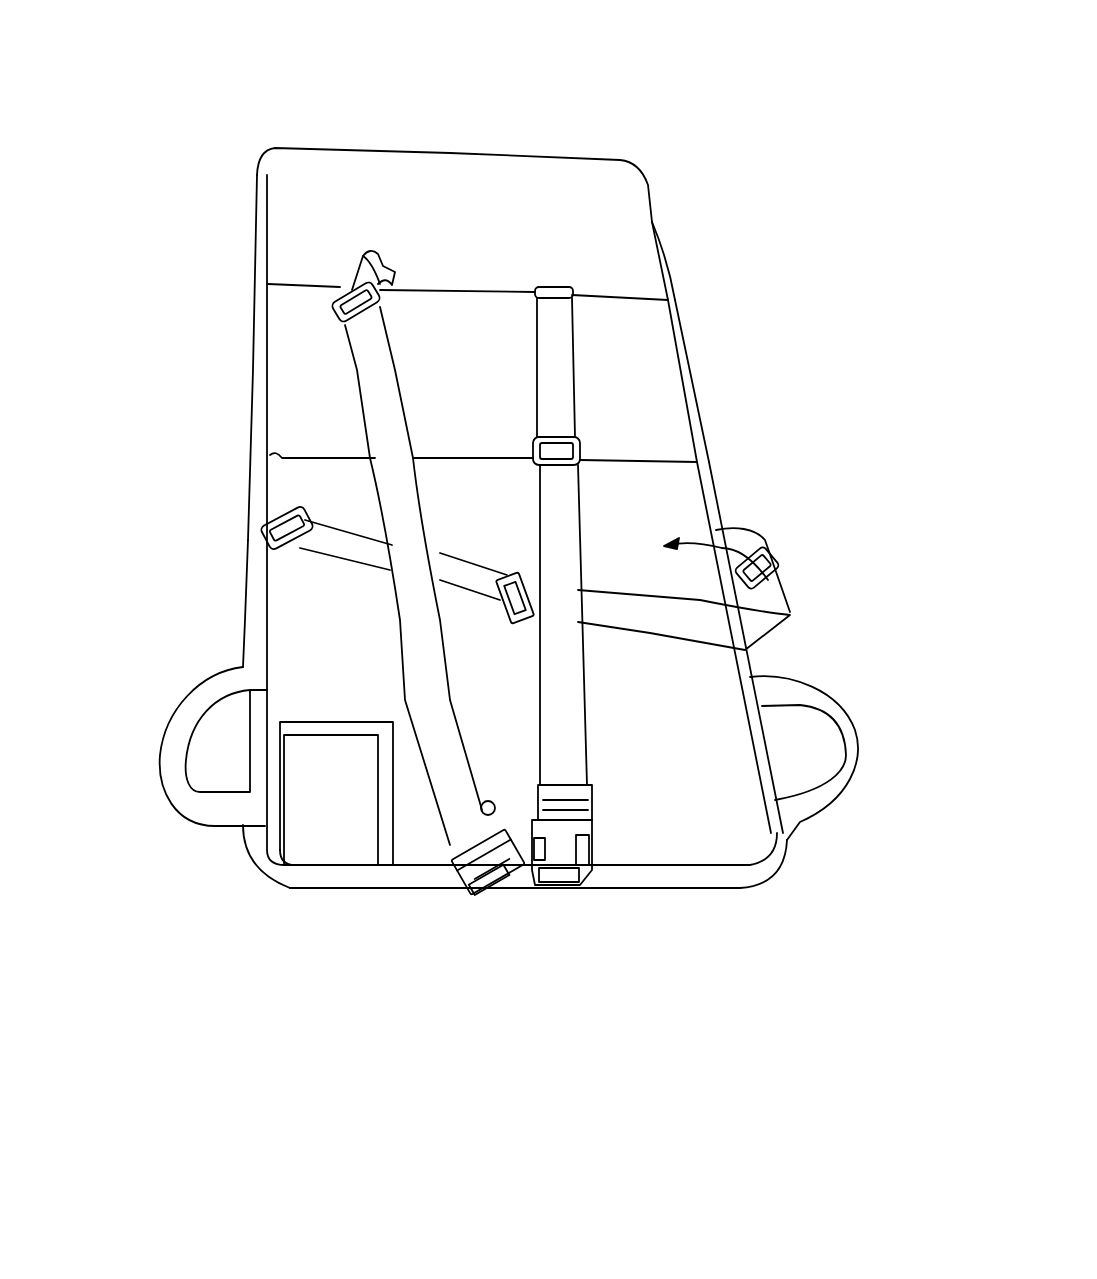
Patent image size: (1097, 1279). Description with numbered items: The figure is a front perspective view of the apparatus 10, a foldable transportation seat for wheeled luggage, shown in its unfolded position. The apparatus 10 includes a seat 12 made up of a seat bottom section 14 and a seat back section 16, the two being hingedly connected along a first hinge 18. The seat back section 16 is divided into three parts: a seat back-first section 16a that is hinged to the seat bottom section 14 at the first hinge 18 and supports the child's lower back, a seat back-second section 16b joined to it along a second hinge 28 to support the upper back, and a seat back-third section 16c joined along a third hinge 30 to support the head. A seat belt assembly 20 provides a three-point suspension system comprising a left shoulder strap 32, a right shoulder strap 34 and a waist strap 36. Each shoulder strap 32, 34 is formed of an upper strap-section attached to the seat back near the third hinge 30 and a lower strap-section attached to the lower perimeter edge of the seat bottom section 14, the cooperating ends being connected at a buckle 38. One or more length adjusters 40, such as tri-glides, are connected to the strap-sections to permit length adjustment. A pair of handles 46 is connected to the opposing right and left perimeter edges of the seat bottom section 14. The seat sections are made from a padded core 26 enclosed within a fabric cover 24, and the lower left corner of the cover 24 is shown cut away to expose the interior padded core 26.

The apparatus 10 is at (697, 115).
The seat 12 is at (277, 165).
The seat bottom section 14 is at (708, 918).
The seat back section 16 is at (255, 372).
The seat back-first section 16a is at (712, 502).
The seat back-second section 16b is at (693, 387).
The seat back-third section 16c is at (652, 222).
The first hinge 18 is at (247, 622).
The seat belt assembly 20 is at (793, 614).
The fabric cover 24 is at (330, 722).
The padded core 26 is at (320, 785).
The second hinge 28 is at (275, 453).
The third hinge 30 is at (277, 283).
The left shoulder strap 32 is at (390, 362).
The right shoulder strap 34 is at (563, 342).
The waist strap 36 is at (680, 623).
The buckle 38 is at (528, 605).
The length adjuster 40 is at (338, 295).
The handle 46 is at (180, 745).